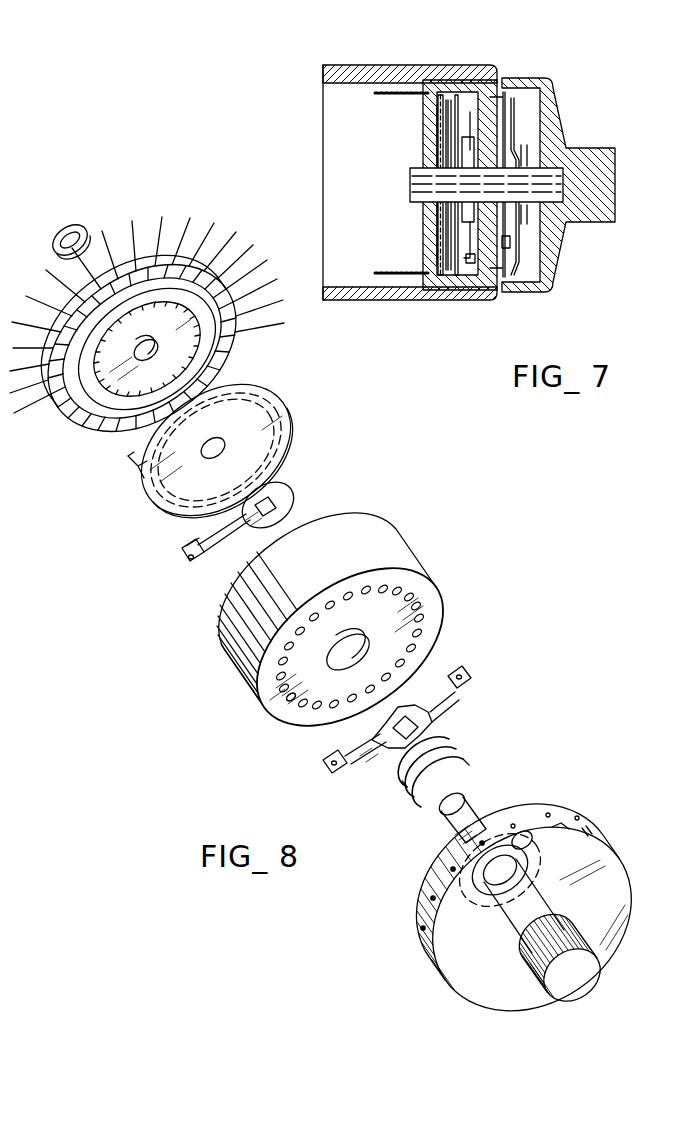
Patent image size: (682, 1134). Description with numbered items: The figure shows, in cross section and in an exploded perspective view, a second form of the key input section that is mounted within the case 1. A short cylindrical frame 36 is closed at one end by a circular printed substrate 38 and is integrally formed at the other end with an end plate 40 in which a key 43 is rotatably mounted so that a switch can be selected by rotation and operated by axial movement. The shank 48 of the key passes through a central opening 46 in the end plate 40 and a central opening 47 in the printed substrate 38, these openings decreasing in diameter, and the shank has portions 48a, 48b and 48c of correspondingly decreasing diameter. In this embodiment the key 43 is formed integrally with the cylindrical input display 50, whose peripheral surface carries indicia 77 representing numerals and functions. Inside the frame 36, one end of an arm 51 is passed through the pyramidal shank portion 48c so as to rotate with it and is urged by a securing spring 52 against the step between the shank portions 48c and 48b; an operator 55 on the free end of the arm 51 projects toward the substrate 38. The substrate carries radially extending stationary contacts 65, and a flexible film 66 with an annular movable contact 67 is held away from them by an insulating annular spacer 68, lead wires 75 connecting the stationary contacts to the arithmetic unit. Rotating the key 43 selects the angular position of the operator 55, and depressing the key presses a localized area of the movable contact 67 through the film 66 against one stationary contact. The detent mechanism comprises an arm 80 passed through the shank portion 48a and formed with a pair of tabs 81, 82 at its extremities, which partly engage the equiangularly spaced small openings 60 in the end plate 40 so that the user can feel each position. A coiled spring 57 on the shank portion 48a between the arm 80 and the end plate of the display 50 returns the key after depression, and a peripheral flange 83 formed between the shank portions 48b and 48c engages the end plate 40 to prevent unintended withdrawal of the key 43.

In FIG. 7, the case 1 is at (397, 70).
In FIG. 7, the cylindrical frame 36 is at (467, 82).
In FIG. 8, the cylindrical frame 36 is at (378, 553).
In FIG. 7, the printed substrate 38 is at (432, 254).
In FIG. 8, the printed substrate 38 is at (192, 352).
In FIG. 7, the end plate 40 is at (508, 245).
In FIG. 8, the end plate 40 is at (414, 603).
In FIG. 7, the key 43 is at (596, 222).
In FIG. 8, the key 43 is at (470, 997).
In FIG. 8, the central opening 46 is at (356, 646).
In FIG. 8, the central opening 47 is at (151, 350).
In FIG. 8, the shank 48 is at (366, 822).
In FIG. 8, the shank portion 48a is at (431, 898).
In FIG. 8, the shank portion 48b is at (451, 869).
In FIG. 8, the shank portion 48c is at (480, 843).
In FIG. 7, the input display 50 is at (548, 290).
In FIG. 8, the input display 50 is at (421, 937).
In FIG. 7, the arm 51 is at (466, 243).
In FIG. 8, the arm 51 is at (216, 553).
In FIG. 7, the securing spring 52 is at (461, 160).
In FIG. 8, the securing spring 52 is at (86, 228).
In FIG. 7, the operator 55 is at (472, 265).
In FIG. 8, the operator 55 is at (188, 552).
In FIG. 7, the coiled spring 57 is at (528, 150).
In FIG. 8, the coiled spring 57 is at (465, 757).
In FIG. 7, the small openings 60 is at (491, 95).
In FIG. 8, the small openings 60 is at (290, 702).
In FIG. 7, the stationary contacts 65 is at (437, 262).
In FIG. 8, the stationary contacts 65 is at (100, 420).
In FIG. 7, the flexible film 66 is at (440, 120).
In FIG. 8, the flexible film 66 is at (138, 472).
In FIG. 7, the movable contact 67 is at (437, 103).
In FIG. 8, the movable contact 67 is at (166, 505).
In FIG. 7, the annular spacer 68 is at (455, 200).
In FIG. 8, the annular spacer 68 is at (208, 318).
In FIG. 7, the lead wires 75 is at (388, 277).
In FIG. 8, the lead wires 75 is at (160, 246).
In FIG. 8, the indicia 77 is at (430, 955).
In FIG. 7, the arm 80 is at (513, 148).
In FIG. 8, the arm 80 is at (445, 722).
In FIG. 8, the tab 81 is at (323, 762).
In FIG. 8, the tab 82 is at (459, 668).
In FIG. 8, the peripheral flange 83 is at (498, 840).